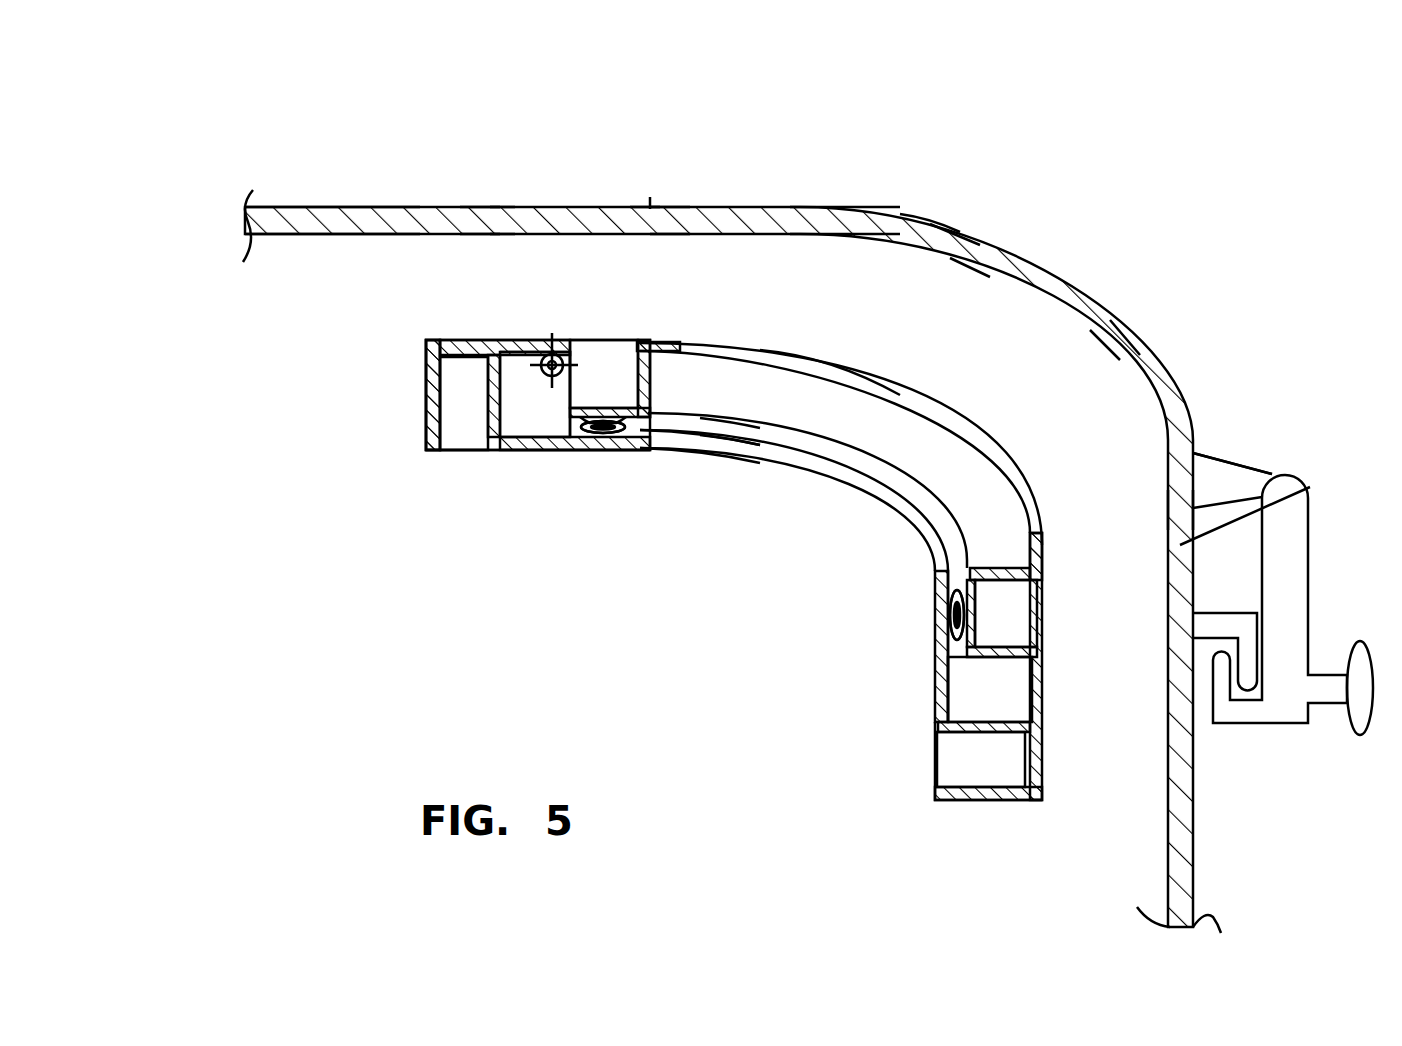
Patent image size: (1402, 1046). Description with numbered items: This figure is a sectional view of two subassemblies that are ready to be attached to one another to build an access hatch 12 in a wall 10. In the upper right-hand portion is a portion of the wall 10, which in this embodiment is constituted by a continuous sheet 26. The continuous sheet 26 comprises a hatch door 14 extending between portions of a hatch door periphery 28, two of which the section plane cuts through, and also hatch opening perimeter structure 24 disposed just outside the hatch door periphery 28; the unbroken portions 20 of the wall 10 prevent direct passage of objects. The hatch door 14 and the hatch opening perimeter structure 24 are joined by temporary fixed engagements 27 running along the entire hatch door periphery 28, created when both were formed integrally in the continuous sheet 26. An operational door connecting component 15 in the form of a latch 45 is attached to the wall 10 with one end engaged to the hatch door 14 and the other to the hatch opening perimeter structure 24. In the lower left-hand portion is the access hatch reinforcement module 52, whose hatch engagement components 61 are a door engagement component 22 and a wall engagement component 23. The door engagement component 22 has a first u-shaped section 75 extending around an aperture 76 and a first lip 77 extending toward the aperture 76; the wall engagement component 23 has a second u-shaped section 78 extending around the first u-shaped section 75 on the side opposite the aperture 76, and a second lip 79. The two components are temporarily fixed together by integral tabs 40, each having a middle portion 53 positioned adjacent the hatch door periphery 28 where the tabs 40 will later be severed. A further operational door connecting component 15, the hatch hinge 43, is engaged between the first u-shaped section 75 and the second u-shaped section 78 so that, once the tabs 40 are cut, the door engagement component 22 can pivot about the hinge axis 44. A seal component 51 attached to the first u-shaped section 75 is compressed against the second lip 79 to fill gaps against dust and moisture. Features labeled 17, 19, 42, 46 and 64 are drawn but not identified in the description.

The wall 10 is at (457, 220).
The access hatch 12 is at (710, 483).
The hatch door 14 is at (913, 230).
The operational door connecting components 15 is at (542, 352).
The outer skin 17 is at (480, 217).
The corner 19 is at (1097, 303).
The unbroken portions 20 is at (362, 218).
The door engagement component 22 is at (650, 392).
The wall engagement component 23 is at (427, 420).
The hatch opening perimeter structure 24 is at (502, 217).
The continuous sheet 26 is at (943, 228).
The temporary fixed engagements 27 is at (668, 220).
The hatch door periphery 28 is at (650, 207).
The tabs 40 is at (505, 340).
The curved portion 42 is at (957, 232).
The hatch hinge 43 is at (538, 375).
The hinge axis 44 is at (555, 343).
The latch 45 is at (1212, 455).
The bracket 46 is at (1307, 560).
The seal component 51 is at (600, 433).
The access hatch reinforcement module 52 is at (628, 445).
The middle portion 53 is at (517, 340).
The hatch engagement components 61 is at (426, 410).
The spacer 64 is at (520, 368).
The first u-shaped section 75 is at (652, 344).
The aperture 76 is at (840, 395).
The first lip 77 is at (653, 338).
The second u-shaped section 78 is at (426, 367).
The second lip 79 is at (590, 430).